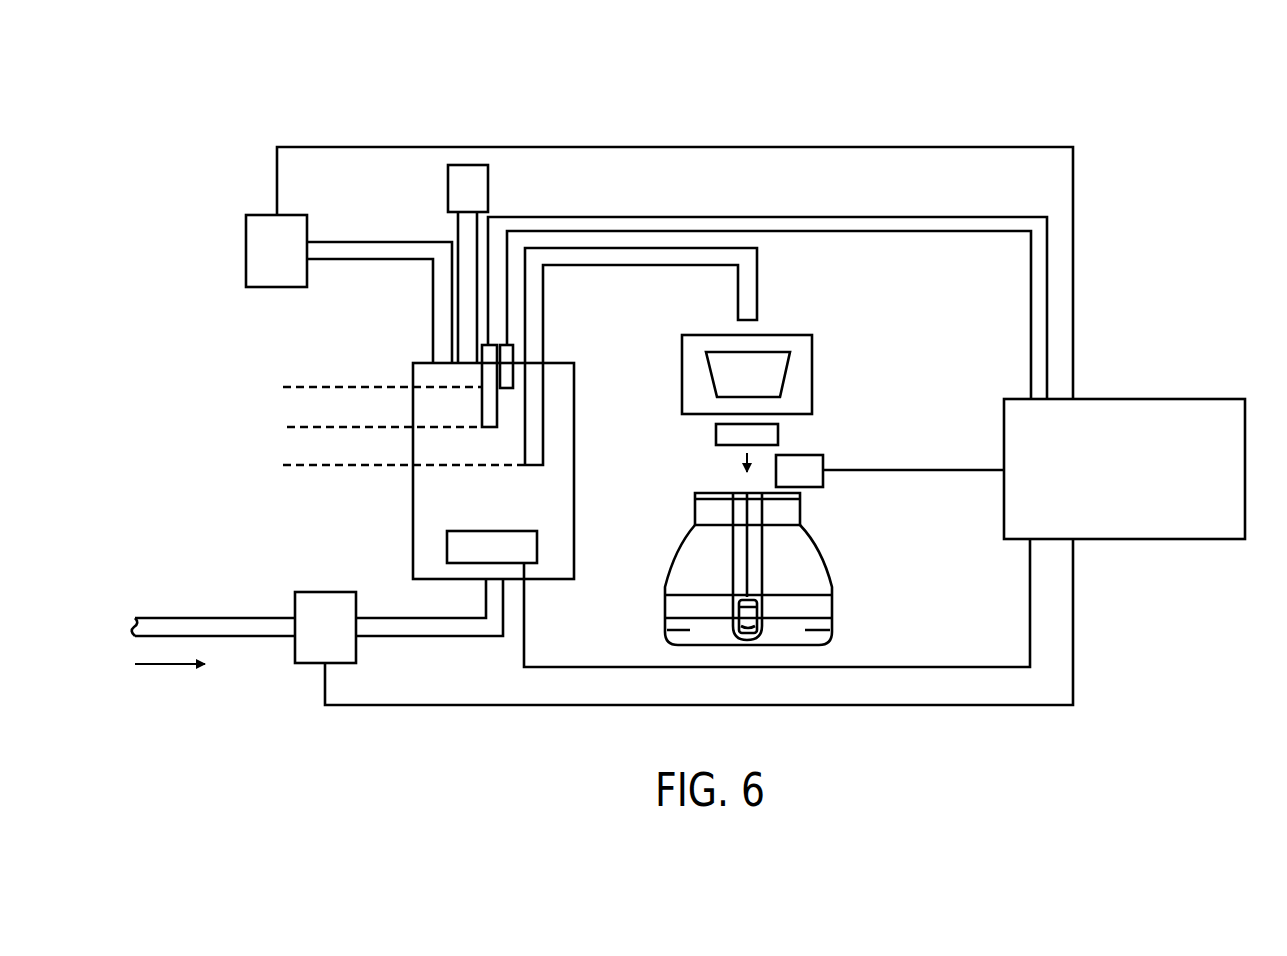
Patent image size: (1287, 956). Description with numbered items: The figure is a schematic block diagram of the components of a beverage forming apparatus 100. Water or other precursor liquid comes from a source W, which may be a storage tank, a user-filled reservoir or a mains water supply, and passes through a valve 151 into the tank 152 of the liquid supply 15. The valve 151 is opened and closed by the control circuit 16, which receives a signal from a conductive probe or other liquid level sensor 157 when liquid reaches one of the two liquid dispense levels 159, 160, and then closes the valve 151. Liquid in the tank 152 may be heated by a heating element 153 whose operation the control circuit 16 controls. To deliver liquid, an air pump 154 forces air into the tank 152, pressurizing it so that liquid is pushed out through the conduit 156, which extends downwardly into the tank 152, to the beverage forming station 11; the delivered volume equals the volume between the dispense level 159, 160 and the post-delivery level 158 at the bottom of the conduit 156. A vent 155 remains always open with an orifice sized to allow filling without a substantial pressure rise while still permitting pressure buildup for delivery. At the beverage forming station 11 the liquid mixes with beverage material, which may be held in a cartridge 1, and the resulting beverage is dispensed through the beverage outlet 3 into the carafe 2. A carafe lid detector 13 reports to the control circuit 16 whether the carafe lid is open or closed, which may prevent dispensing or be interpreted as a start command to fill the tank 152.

The beverage forming apparatus 100 is at (258, 112).
The air pump 154 is at (265, 262).
The vent 155 is at (460, 192).
The control circuit 16 is at (1226, 430).
The tank 152 is at (562, 478).
The conduit 156 is at (536, 320).
The liquid level sensor 157 is at (507, 370).
The liquid dispense level 160 is at (308, 386).
The liquid dispense level 159 is at (308, 426).
The post-delivery level 158 is at (308, 464).
The heating element 153 is at (497, 548).
The liquid supply 15 is at (292, 503).
The valve 151 is at (325, 608).
The source W is at (266, 640).
The beverage forming station 11 is at (797, 377).
The cartridge 1 is at (767, 363).
The beverage outlet 3 is at (722, 433).
The carafe lid detector 13 is at (805, 476).
The carafe 2 is at (806, 558).